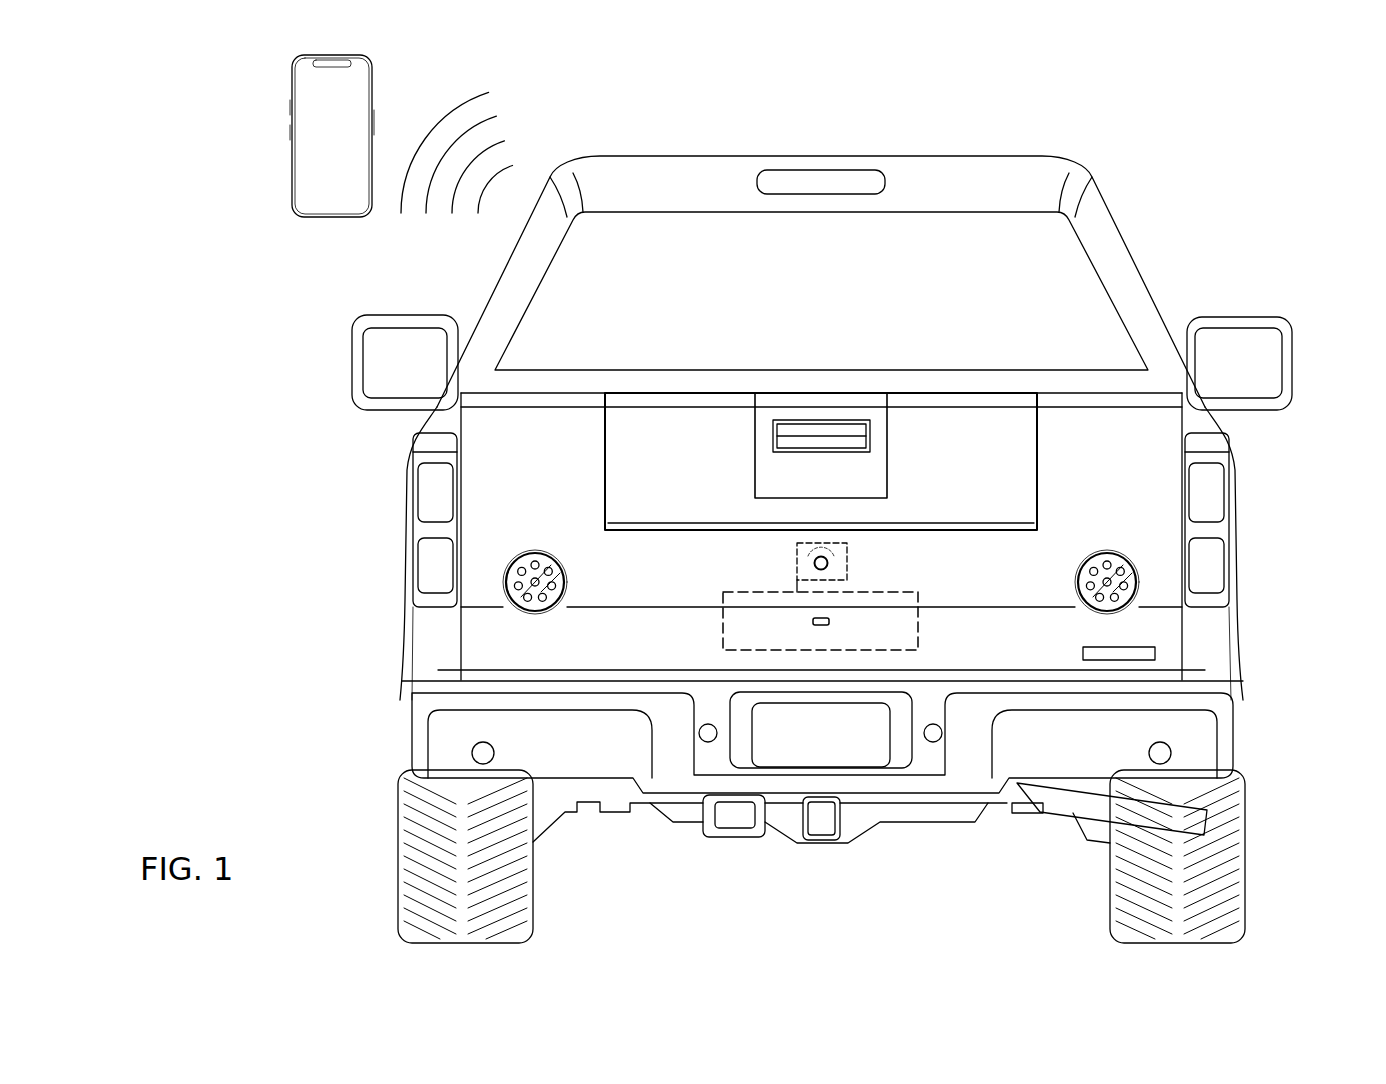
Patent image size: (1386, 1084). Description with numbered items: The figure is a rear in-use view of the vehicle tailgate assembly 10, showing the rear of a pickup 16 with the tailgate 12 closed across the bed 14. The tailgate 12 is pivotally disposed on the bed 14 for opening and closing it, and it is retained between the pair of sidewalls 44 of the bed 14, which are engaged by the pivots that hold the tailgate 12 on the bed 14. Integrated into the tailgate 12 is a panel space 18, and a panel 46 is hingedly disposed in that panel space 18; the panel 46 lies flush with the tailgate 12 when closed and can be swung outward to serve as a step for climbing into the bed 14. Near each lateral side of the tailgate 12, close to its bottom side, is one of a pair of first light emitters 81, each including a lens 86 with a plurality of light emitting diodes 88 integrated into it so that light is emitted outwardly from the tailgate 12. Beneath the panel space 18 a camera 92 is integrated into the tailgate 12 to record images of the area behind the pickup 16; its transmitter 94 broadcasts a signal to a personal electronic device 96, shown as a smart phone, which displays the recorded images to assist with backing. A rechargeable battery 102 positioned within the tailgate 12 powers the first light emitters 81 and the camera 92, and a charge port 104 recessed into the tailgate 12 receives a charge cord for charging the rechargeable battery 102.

The vehicle tailgate assembly 10 is at (258, 300).
The tailgate 12 is at (1157, 393).
The bed 14 is at (375, 520).
The pickup 16 is at (631, 152).
The panel space 18 is at (610, 424).
The sidewalls 44 is at (402, 602).
The panel 46 is at (978, 420).
The first light emitters 81 is at (507, 595).
The lens 86 is at (547, 609).
The light emitting diodes 88 is at (520, 573).
The camera 92 is at (826, 568).
The transmitter 94 is at (797, 580).
The personal electronic device 96 is at (302, 130).
The rechargeable battery 102 is at (729, 650).
The charge port 104 is at (821, 627).